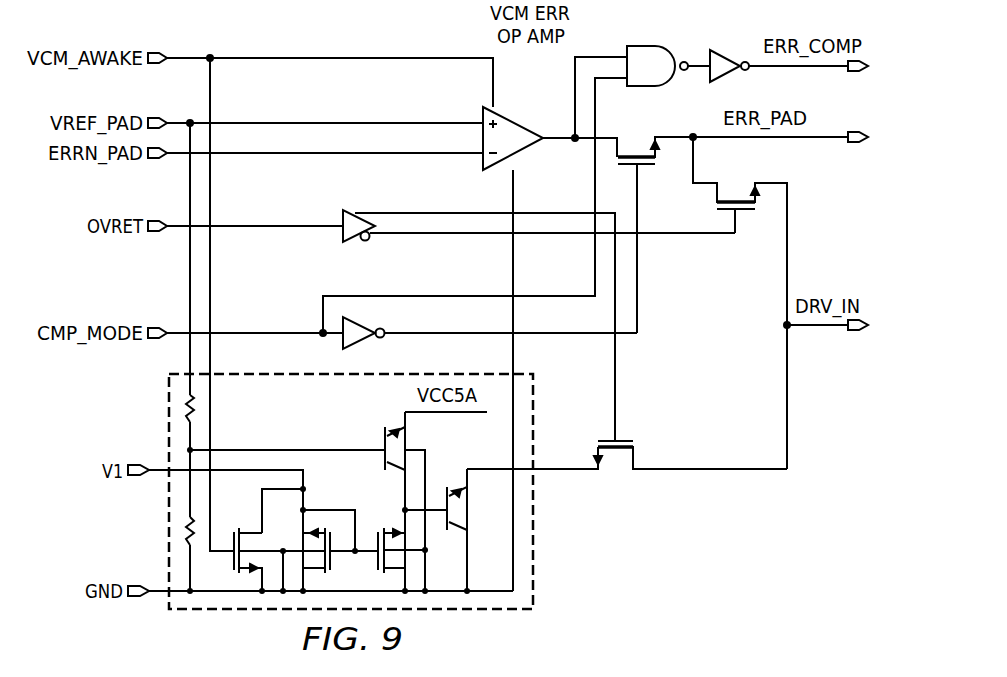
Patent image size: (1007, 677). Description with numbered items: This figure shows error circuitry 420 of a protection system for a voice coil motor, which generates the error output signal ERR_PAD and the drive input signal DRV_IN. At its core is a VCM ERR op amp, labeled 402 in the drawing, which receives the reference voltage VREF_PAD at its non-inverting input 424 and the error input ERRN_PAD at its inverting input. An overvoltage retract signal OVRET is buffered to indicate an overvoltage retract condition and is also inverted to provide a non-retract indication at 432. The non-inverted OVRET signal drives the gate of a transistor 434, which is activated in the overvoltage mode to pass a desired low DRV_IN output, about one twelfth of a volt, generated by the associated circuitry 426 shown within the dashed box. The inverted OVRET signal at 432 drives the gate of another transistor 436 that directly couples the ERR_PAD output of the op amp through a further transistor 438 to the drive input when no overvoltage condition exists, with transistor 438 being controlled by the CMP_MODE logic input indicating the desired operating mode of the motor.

The VCM error op amp 402 is at (508, 112).
The non-inverting input 424 is at (345, 122).
The inverted OVRET signal 432 is at (437, 236).
The transistor 438 is at (640, 166).
The transistor 436 is at (745, 212).
The transistor 434 is at (625, 438).
The associated circuitry 426 is at (533, 530).
The error circuitry 420 is at (678, 512).